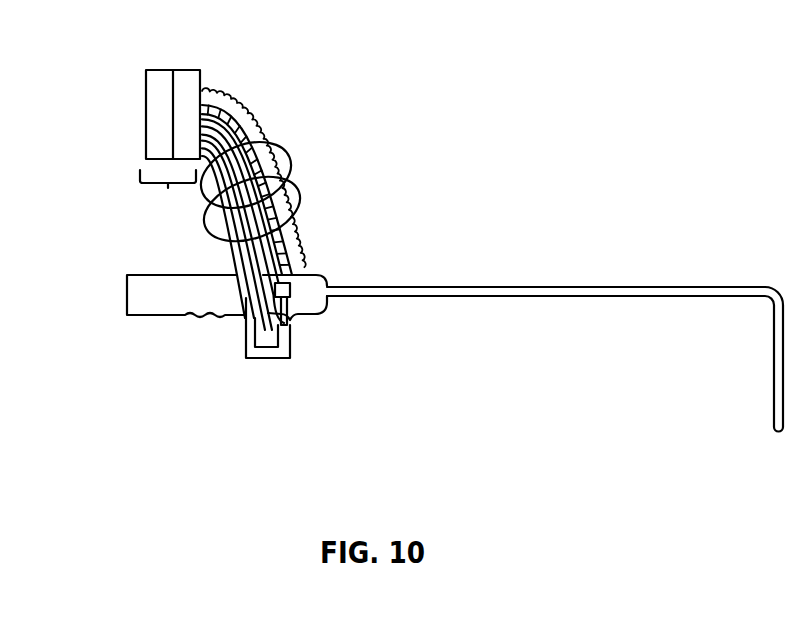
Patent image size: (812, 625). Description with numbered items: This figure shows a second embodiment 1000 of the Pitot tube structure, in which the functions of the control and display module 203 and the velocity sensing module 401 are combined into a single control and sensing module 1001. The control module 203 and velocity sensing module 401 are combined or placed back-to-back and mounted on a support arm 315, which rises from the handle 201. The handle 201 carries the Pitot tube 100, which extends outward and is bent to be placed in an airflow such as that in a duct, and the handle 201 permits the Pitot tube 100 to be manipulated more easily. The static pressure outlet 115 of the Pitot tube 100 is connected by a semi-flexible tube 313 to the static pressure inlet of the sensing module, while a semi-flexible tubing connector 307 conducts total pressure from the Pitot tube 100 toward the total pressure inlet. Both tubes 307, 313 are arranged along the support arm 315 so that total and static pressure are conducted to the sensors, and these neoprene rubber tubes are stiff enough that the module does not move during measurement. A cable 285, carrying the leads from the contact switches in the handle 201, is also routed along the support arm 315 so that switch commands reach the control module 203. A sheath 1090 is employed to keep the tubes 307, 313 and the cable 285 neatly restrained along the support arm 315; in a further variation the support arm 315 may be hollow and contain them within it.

The second embodiment 1000 is at (517, 45).
The control and display module 203 is at (158, 70).
The velocity sensing module 401 is at (187, 70).
The control and sensing module 1001 is at (168, 188).
The support arm 315 is at (251, 128).
The sheath 1090 is at (293, 172).
The cable 285 is at (314, 245).
The handle 201 is at (152, 275).
The static pressure outlet 115 is at (294, 314).
The semi-flexible tube 313 is at (270, 358).
The semi-flexible tubing connector 307 is at (255, 330).
The Pitot tube 100 is at (613, 287).